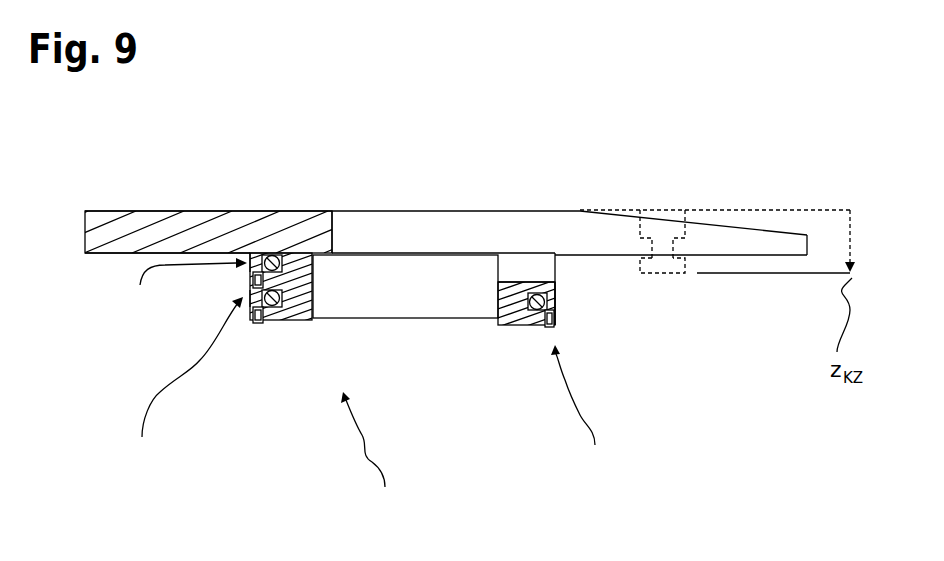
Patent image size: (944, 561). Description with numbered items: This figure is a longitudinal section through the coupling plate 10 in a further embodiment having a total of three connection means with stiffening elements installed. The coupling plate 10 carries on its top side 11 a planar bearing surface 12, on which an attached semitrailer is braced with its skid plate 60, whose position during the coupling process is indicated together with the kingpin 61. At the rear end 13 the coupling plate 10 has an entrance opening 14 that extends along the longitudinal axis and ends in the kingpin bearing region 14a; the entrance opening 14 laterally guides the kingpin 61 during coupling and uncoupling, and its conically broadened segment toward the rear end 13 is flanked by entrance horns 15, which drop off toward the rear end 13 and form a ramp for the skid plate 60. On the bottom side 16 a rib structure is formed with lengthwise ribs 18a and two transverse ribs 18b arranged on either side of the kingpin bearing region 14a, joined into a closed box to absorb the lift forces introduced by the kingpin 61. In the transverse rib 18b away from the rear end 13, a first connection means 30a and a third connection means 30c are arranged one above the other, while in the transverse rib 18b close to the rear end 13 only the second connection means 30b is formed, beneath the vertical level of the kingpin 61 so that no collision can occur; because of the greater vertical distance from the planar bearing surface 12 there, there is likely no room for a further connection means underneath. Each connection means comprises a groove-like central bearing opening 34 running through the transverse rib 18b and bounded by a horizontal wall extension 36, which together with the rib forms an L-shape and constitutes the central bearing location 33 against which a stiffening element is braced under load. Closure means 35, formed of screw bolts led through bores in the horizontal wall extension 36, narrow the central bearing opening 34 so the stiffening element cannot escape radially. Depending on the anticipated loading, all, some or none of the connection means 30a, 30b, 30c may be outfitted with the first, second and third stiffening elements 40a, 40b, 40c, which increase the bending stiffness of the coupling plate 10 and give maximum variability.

The coupling plate 10 is at (175, 210).
The top side 11 is at (538, 210).
The planar bearing surface 12 is at (263, 210).
The rear end 13 is at (807, 240).
The entrance opening 14 is at (628, 210).
The kingpin bearing region 14a is at (347, 222).
The entrance horns 15 is at (705, 210).
The bottom side 16 is at (115, 253).
The lengthwise ribs 18a is at (420, 318).
The transverse ribs 18b is at (318, 283).
The first connection means 30a is at (183, 285).
The second connection means 30b is at (595, 410).
The third connection means 30c is at (182, 380).
The central bearing location 33 is at (370, 453).
The central bearing opening 34 is at (556, 316).
The closure means 35 is at (258, 322).
The horizontal wall extension 36 is at (248, 283).
The first stiffening element 40a is at (250, 258).
The second stiffening element 40b is at (548, 302).
The third stiffening element 40c is at (253, 304).
The skid plate 60 is at (767, 208).
The kingpin 61 is at (666, 275).